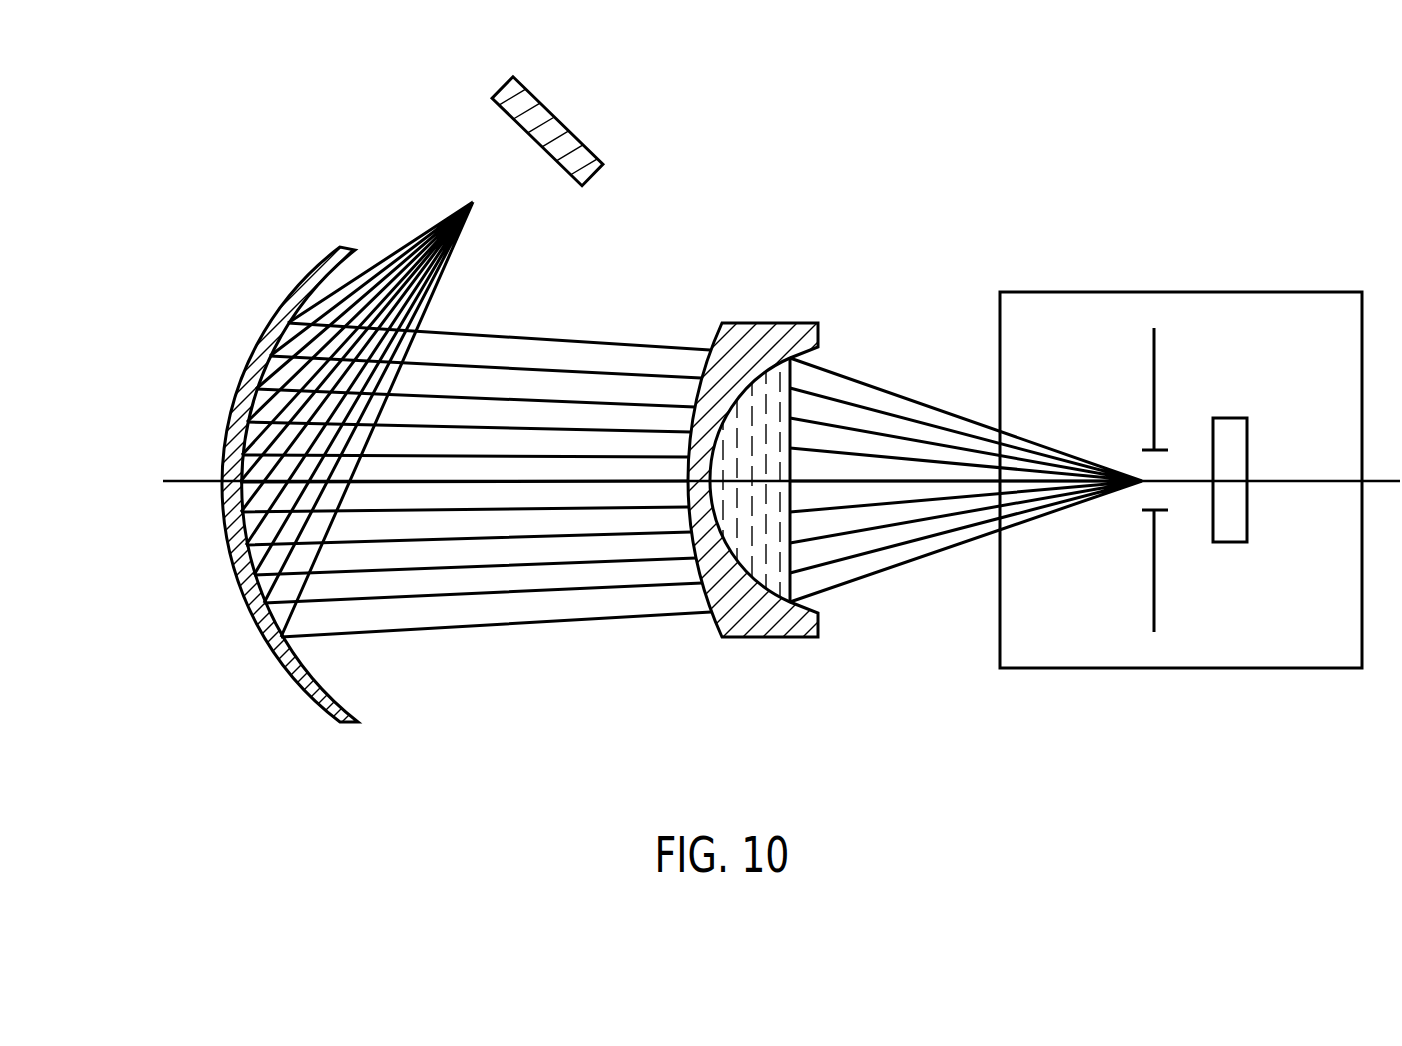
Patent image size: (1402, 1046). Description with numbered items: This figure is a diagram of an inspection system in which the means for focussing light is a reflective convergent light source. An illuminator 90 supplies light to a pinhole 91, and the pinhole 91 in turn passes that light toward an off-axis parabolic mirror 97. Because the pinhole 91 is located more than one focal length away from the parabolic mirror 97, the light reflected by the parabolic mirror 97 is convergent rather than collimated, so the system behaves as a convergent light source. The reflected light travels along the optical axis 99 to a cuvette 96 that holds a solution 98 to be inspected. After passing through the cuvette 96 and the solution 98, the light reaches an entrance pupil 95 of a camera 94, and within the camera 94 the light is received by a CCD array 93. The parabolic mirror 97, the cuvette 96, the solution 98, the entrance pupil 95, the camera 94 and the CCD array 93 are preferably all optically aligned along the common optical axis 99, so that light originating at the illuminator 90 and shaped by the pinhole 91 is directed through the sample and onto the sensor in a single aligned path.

The illuminator 90 is at (593, 180).
The pinhole 91 is at (473, 202).
The CCD array 93 is at (1230, 418).
The camera 94 is at (1120, 668).
The entrance pupil 95 is at (1157, 450).
The cuvette 96 is at (762, 637).
The parabolic mirror 97 is at (318, 258).
The solution 98 is at (772, 388).
The optical axis 99 is at (480, 483).